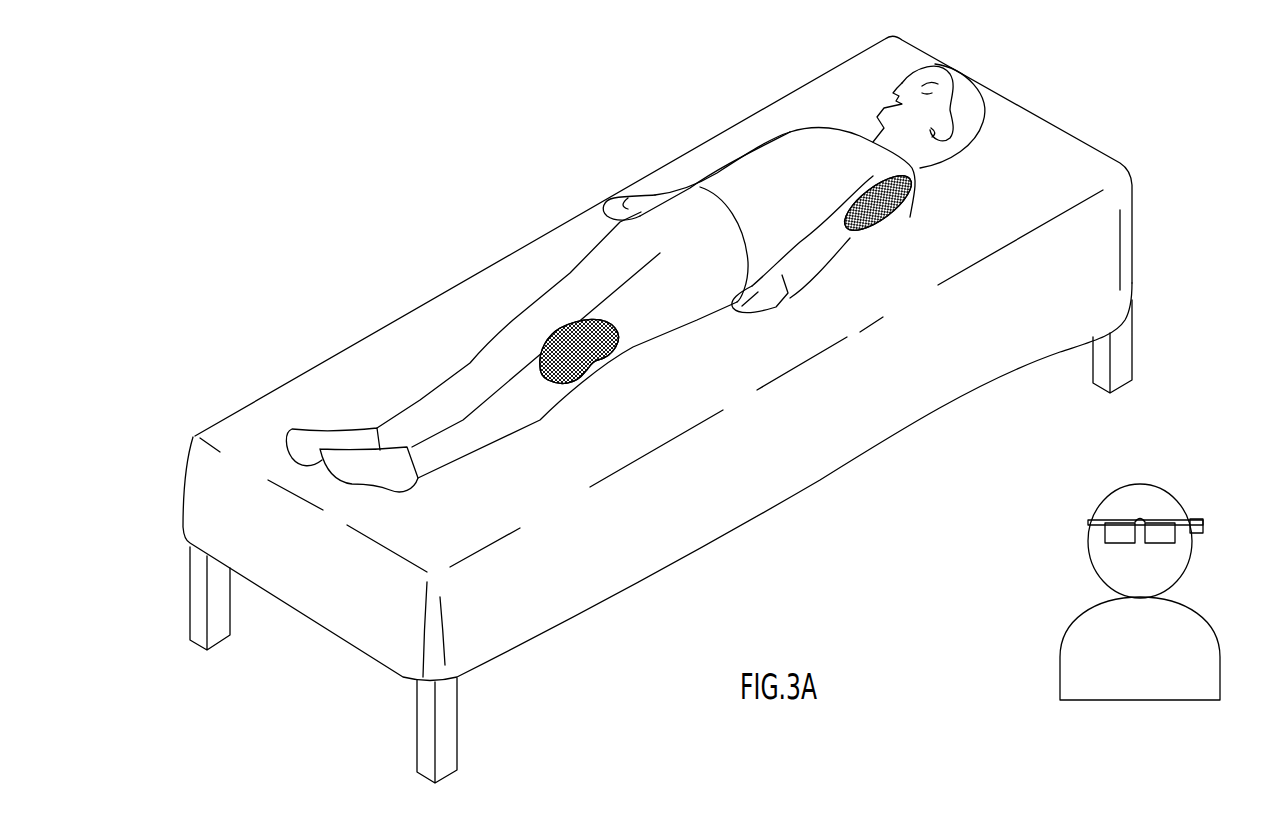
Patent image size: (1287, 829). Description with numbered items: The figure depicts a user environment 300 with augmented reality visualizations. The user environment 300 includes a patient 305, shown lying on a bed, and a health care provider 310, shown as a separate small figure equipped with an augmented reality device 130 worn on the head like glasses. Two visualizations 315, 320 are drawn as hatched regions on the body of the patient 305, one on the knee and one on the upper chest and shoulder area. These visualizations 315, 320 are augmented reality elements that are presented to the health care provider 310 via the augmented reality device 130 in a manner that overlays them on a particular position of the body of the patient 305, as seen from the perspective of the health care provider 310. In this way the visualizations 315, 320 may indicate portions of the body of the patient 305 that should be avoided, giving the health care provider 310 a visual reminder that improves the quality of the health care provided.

The user environment 300 is at (372, 134).
The patient 305 is at (782, 243).
The health care provider 310 is at (1060, 652).
The visualization 315 is at (562, 382).
The visualization 320 is at (882, 218).
The augmented reality device 130 is at (1205, 527).